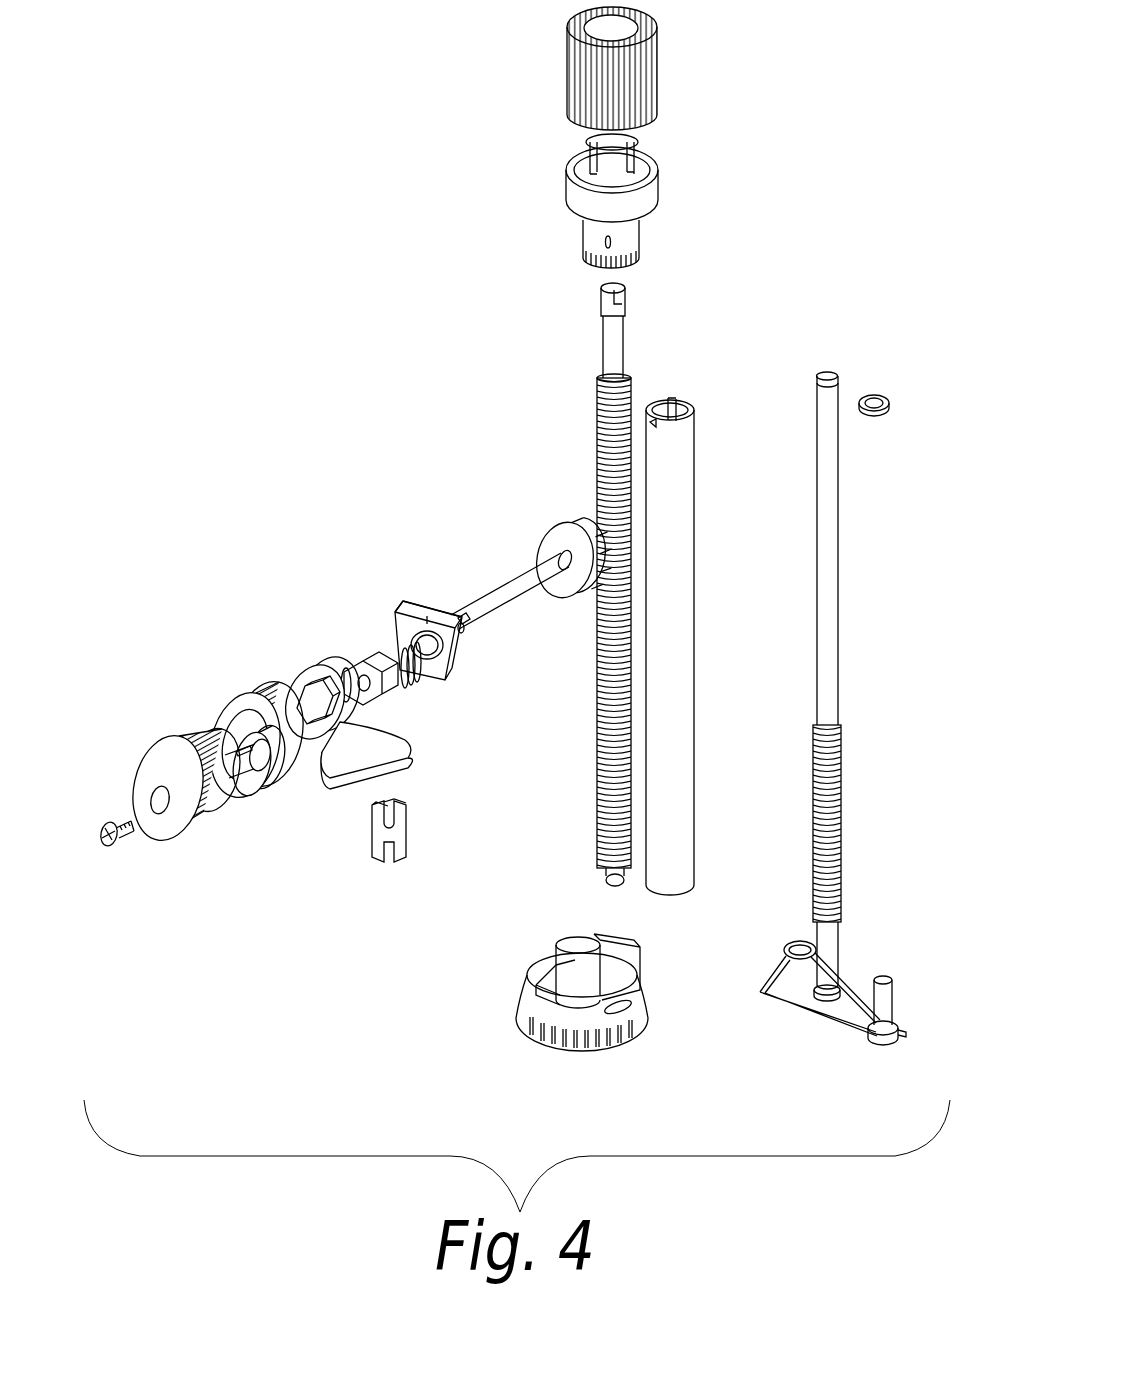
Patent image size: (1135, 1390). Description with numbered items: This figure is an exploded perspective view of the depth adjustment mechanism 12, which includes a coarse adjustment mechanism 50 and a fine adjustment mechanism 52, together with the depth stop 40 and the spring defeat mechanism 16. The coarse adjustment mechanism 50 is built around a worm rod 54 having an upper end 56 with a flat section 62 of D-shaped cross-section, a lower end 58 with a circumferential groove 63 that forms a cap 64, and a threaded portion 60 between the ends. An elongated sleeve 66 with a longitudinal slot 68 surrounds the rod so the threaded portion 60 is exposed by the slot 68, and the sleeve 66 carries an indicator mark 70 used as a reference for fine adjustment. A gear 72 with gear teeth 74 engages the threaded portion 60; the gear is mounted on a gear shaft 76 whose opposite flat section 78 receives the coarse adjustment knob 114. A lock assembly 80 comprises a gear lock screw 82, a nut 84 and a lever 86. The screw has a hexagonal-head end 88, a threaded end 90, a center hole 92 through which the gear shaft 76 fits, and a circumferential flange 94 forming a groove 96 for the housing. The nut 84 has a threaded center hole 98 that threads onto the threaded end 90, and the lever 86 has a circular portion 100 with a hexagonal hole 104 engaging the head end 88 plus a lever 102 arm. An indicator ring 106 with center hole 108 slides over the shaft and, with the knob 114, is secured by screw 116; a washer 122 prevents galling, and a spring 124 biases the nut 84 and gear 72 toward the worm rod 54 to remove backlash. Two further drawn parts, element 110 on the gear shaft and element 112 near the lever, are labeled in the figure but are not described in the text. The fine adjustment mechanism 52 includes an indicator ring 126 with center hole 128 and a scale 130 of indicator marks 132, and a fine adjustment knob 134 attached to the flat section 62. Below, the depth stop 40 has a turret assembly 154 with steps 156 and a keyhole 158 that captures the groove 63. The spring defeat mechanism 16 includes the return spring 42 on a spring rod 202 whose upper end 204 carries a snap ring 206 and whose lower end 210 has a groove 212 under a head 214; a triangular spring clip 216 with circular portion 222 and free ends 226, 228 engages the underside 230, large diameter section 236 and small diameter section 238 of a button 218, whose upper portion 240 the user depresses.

The depth adjustment mechanism 12 is at (470, 456).
The spring defeat mechanism 16 is at (879, 868).
The depth stop 40 is at (569, 1019).
The return spring 42 is at (842, 745).
The coarse adjustment mechanism 50 is at (137, 719).
The fine adjustment mechanism 52 is at (641, 137).
The worm rod 54 is at (633, 594).
The upper end 56 is at (612, 286).
The lower end 58 is at (606, 880).
The threaded portion 60 is at (626, 384).
The flat section 62 is at (622, 298).
The groove 63 is at (606, 870).
The cap 64 is at (672, 886).
The sleeve 66 is at (701, 656).
The longitudinal slot 68 is at (672, 402).
The indicator mark 70 is at (656, 425).
The gear 72 is at (541, 525).
The gear teeth 74 is at (580, 520).
The gear shaft 76 is at (512, 595).
The flat section 78 is at (462, 612).
The lock assembly 80 is at (410, 576).
The gear lock screw 82 is at (372, 690).
The nut 84 is at (428, 630).
The lever 86 is at (335, 792).
The hexagonal-head end 88 is at (389, 674).
The threaded end 90 is at (434, 658).
The center hole 92 is at (346, 670).
The circumferential flange 94 is at (408, 626).
The groove 96 is at (414, 686).
The threaded center hole 98 is at (428, 615).
The circular portion 100 is at (318, 693).
The lever 102 is at (388, 760).
The hexagonal hole 104 is at (256, 654).
The indicator ring 106 is at (262, 797).
The center hole 108 is at (232, 724).
The key pin 110 is at (240, 750).
The lever 112 is at (318, 759).
The coarse adjustment knob 114 is at (192, 822).
The screw 116 is at (110, 848).
The washer 122 is at (400, 862).
The spring 124 is at (405, 600).
The indicator ring 126 is at (658, 178).
The center hole 128 is at (600, 135).
The scale 130 is at (610, 244).
The indicator marks 132 is at (592, 240).
The fine adjustment knob 134 is at (648, 44).
The turret assembly 154 is at (615, 972).
The steps 156 is at (530, 995).
The keyhole 158 is at (625, 1006).
The spring rod 202 is at (878, 644).
The upper end 204 is at (838, 378).
The snap ring 206 is at (882, 396).
The lower end 210 is at (791, 1001).
The groove 212 is at (836, 983).
The head 214 is at (826, 1000).
The spring clip 216 is at (762, 994).
The button 218 is at (886, 978).
The circular portion 222 is at (796, 940).
The free end 226 is at (860, 1022).
The free end 228 is at (900, 1030).
The underside 230 is at (890, 1040).
The large diameter section 236 is at (884, 1044).
The small diameter section 238 is at (902, 1030).
The upper portion 240 is at (910, 995).